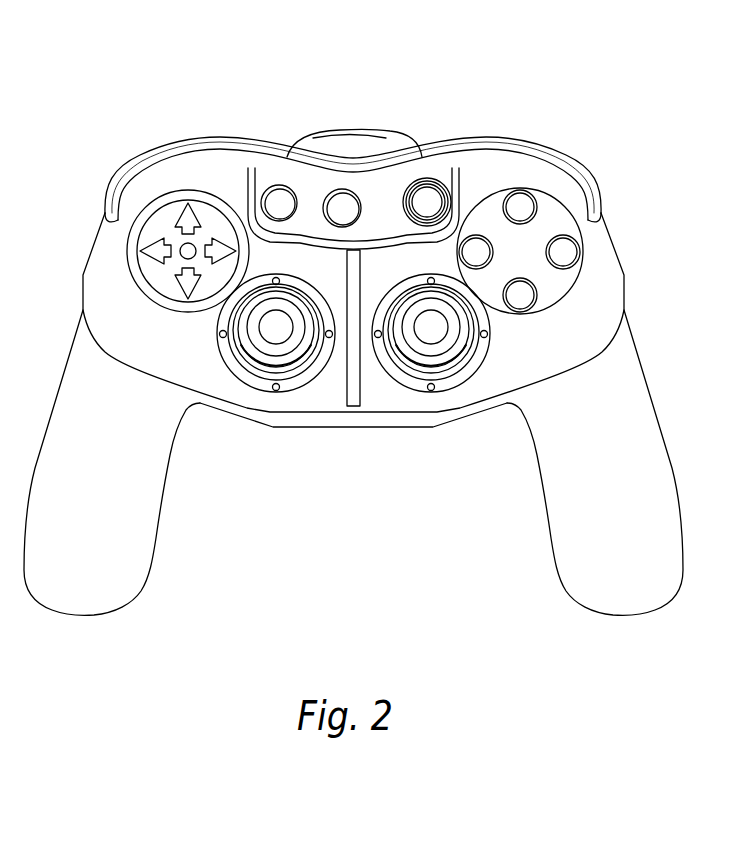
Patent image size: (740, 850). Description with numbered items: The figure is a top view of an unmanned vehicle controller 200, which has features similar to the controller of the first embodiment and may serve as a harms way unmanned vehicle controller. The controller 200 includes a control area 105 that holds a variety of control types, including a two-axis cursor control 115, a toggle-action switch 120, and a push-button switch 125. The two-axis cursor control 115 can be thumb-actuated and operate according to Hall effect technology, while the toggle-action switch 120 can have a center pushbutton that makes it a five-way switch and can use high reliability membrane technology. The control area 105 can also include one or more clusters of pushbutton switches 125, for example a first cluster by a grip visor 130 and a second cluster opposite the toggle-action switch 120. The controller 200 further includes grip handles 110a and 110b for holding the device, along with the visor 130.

The unmanned vehicle controller 200 is at (441, 52).
The control area 105 is at (305, 402).
The grip handle 110a is at (153, 538).
The grip handle 110b is at (542, 508).
The 2-axis cursor control 115 is at (240, 358).
The toggle-action switch 120 is at (140, 263).
The push-button switch 125 is at (274, 190).
The grip visor 130 is at (521, 141).